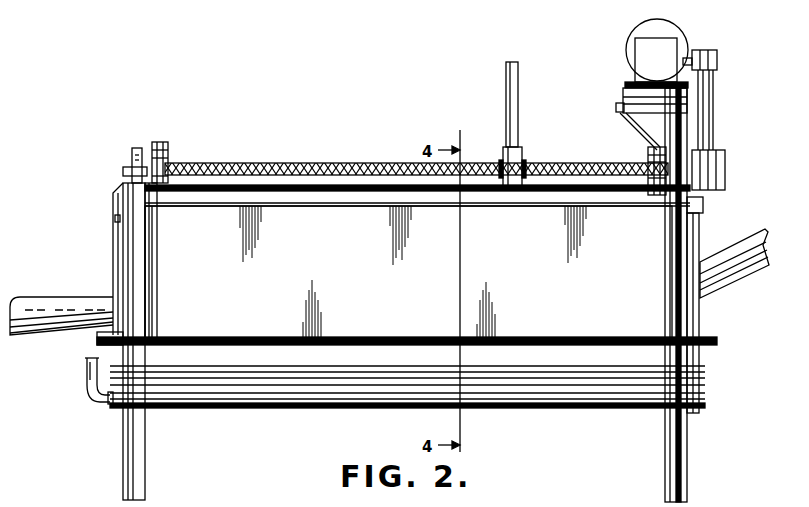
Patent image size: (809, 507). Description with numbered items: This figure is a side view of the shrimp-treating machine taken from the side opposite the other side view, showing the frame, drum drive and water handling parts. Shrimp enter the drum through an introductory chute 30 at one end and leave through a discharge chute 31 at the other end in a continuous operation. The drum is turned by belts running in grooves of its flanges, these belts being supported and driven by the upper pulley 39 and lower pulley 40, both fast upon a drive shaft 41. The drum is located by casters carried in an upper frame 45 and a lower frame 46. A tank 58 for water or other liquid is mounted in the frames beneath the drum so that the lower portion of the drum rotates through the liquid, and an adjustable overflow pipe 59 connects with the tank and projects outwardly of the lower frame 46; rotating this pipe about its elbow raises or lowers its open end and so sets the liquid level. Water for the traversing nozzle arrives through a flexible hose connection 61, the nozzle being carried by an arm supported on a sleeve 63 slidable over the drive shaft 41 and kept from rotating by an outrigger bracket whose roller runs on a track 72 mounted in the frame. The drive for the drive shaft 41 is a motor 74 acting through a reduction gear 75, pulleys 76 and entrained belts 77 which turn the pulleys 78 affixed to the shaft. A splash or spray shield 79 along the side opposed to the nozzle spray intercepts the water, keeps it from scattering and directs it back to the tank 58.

The introductory chute 30 is at (742, 288).
The discharge chute 31 is at (50, 292).
The upper pulley 39 is at (648, 165).
The lower pulley 40 is at (168, 165).
The drive shaft 41 is at (350, 172).
The upper frame 45 is at (665, 449).
The lower frame 46 is at (128, 452).
The tank 58 is at (453, 408).
The adjustable overflow pipe 59 is at (87, 375).
The flexible hose connection 61 is at (506, 93).
The sleeve 63 is at (503, 165).
The track 72 is at (548, 200).
The motor 74 is at (640, 32).
The reduction gear 75 is at (635, 62).
The pulleys 76 is at (717, 62).
The belts 77 is at (703, 127).
The pulleys 78 is at (725, 160).
The splash or spray shield 79 is at (414, 291).